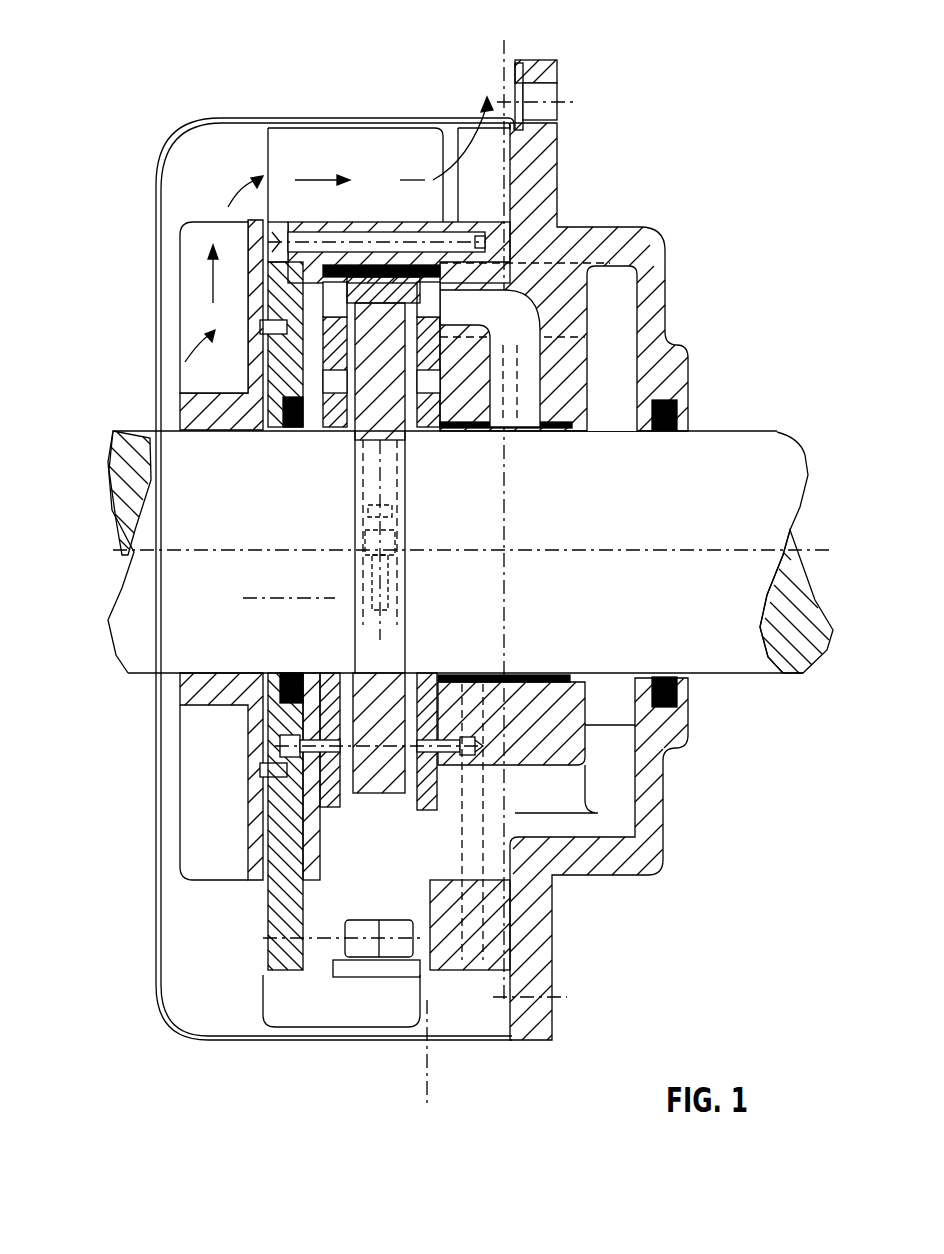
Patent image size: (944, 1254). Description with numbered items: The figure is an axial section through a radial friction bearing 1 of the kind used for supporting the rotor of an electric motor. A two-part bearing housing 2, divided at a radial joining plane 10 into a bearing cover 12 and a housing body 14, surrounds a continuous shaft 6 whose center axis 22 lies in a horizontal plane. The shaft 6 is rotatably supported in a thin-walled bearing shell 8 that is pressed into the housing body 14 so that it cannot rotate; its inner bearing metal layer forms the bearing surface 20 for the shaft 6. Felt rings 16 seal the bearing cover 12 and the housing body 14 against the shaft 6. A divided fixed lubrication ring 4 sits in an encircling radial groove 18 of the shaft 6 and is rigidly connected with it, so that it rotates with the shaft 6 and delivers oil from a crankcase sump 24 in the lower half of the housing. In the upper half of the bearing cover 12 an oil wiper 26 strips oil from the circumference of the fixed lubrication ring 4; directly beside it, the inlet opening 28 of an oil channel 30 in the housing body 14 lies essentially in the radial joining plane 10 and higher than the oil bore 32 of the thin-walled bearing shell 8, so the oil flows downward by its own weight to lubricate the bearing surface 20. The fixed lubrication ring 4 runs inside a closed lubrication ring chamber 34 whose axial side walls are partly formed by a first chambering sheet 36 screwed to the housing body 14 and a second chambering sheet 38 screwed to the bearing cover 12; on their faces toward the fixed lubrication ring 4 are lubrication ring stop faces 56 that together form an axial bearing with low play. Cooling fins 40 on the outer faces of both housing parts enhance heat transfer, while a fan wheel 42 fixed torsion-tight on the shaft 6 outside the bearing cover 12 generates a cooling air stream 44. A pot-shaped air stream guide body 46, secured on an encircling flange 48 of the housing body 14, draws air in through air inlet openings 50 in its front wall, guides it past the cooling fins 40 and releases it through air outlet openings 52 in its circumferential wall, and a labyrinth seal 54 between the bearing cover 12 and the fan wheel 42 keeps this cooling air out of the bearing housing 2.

The radial friction bearing 1 is at (86, 90).
The bearing housing 2 is at (730, 80).
The fixed lubrication ring 4 is at (418, 803).
The shaft 6 is at (757, 663).
The thin-walled bearing shell 8 is at (553, 672).
The radial joining plane 10 is at (427, 1102).
The bearing cover 12 is at (263, 970).
The housing body 14 is at (537, 923).
The felt rings 16 is at (285, 700).
The encircling radial groove 18 is at (363, 528).
The bearing surface 20 is at (545, 662).
The center axis 22 is at (812, 543).
The crankcase sump 24 is at (372, 883).
The oil wiper 26 is at (360, 258).
The inlet opening 28 is at (443, 285).
The oil channel 30 is at (530, 373).
The oil bore 32 is at (560, 483).
The lubrication ring chamber 34 is at (285, 327).
The first chambering sheet 36 is at (268, 945).
The second chambering sheet 38 is at (355, 795).
The cooling fins 40 is at (283, 152).
The fan wheel 42 is at (215, 687).
The cooling air stream 44 is at (205, 265).
The air stream guide body 46 is at (162, 178).
The encircling flange 48 is at (547, 70).
The air inlet openings 50 is at (185, 362).
The air outlet openings 52 is at (462, 125).
The labyrinth seal 54 is at (258, 768).
The lubrication ring stop faces 56 is at (378, 690).